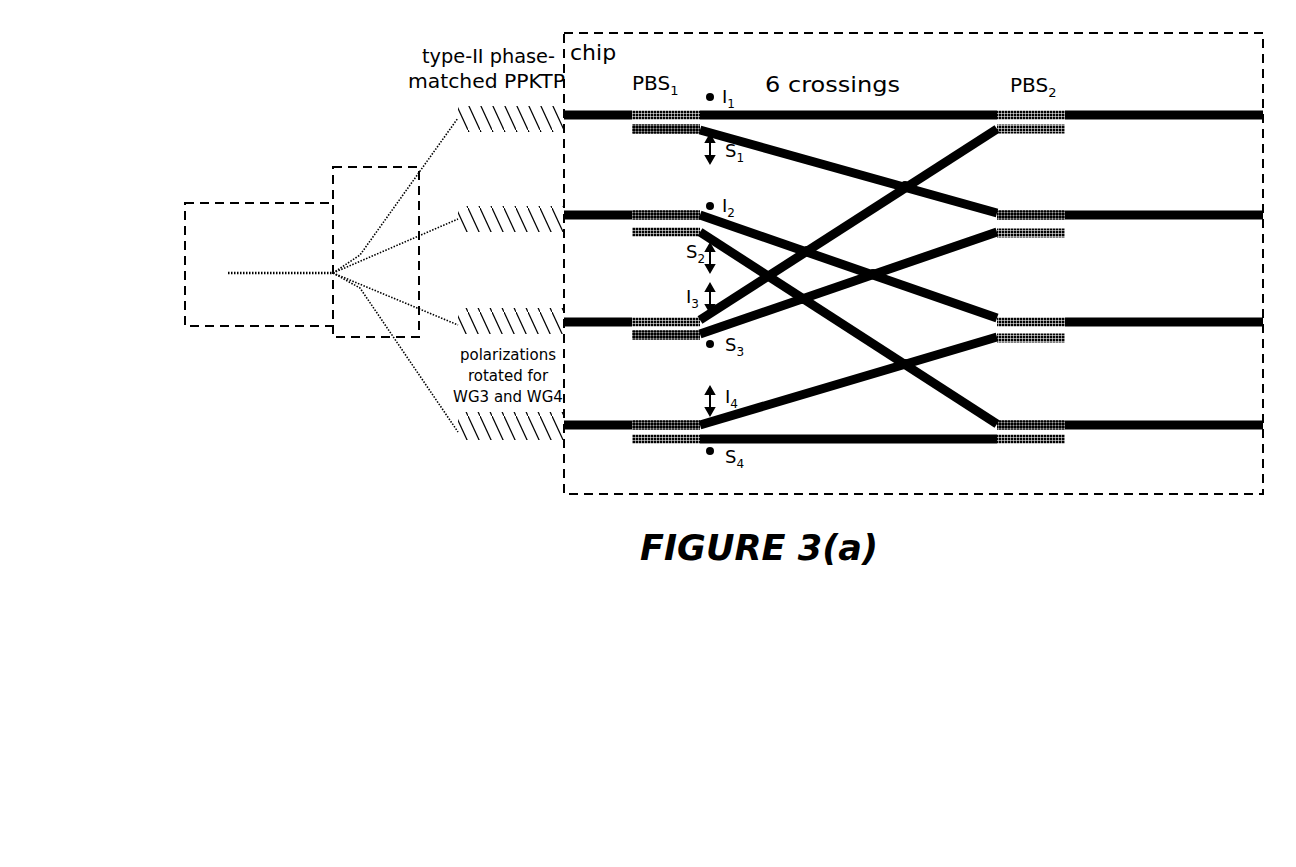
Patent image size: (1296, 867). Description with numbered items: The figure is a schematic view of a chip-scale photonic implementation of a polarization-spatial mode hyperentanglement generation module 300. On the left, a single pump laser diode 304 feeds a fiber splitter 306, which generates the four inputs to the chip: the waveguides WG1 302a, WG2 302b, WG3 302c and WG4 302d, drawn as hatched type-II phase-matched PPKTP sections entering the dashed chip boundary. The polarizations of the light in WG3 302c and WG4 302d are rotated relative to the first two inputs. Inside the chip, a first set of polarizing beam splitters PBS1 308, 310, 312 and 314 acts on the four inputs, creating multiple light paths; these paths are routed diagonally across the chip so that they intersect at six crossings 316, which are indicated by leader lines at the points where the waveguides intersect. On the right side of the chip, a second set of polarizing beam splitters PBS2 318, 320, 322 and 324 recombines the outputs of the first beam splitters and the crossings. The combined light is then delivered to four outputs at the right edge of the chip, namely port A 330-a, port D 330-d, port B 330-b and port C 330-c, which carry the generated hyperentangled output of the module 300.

The module 300 is at (831, 19).
The input WG1 302a is at (516, 134).
The input WG2 302b is at (545, 205).
The input WG3 302c is at (555, 302).
The input WG4 302d is at (518, 437).
The single pump laser diode 304 is at (284, 201).
The fiber splitter 306 is at (370, 165).
The polarizing beam splitter PBS1 308 is at (652, 129).
The polarizing beam splitter PBS1 310 is at (666, 205).
The polarizing beam splitter PBS1 312 is at (665, 337).
The polarizing beam splitter PBS1 314 is at (688, 412).
The crossing 316 is at (812, 252).
The polarizing beam splitter PBS2 318 is at (1035, 130).
The polarizing beam splitter PBS2 320 is at (1046, 205).
The polarizing beam splitter PBS2 322 is at (1045, 338).
The polarizing beam splitter PBS2 324 is at (1072, 412).
The port A 330-a is at (1256, 118).
The port B 330-b is at (1256, 325).
The port C 330-c is at (1256, 427).
The port D 330-d is at (1256, 218).